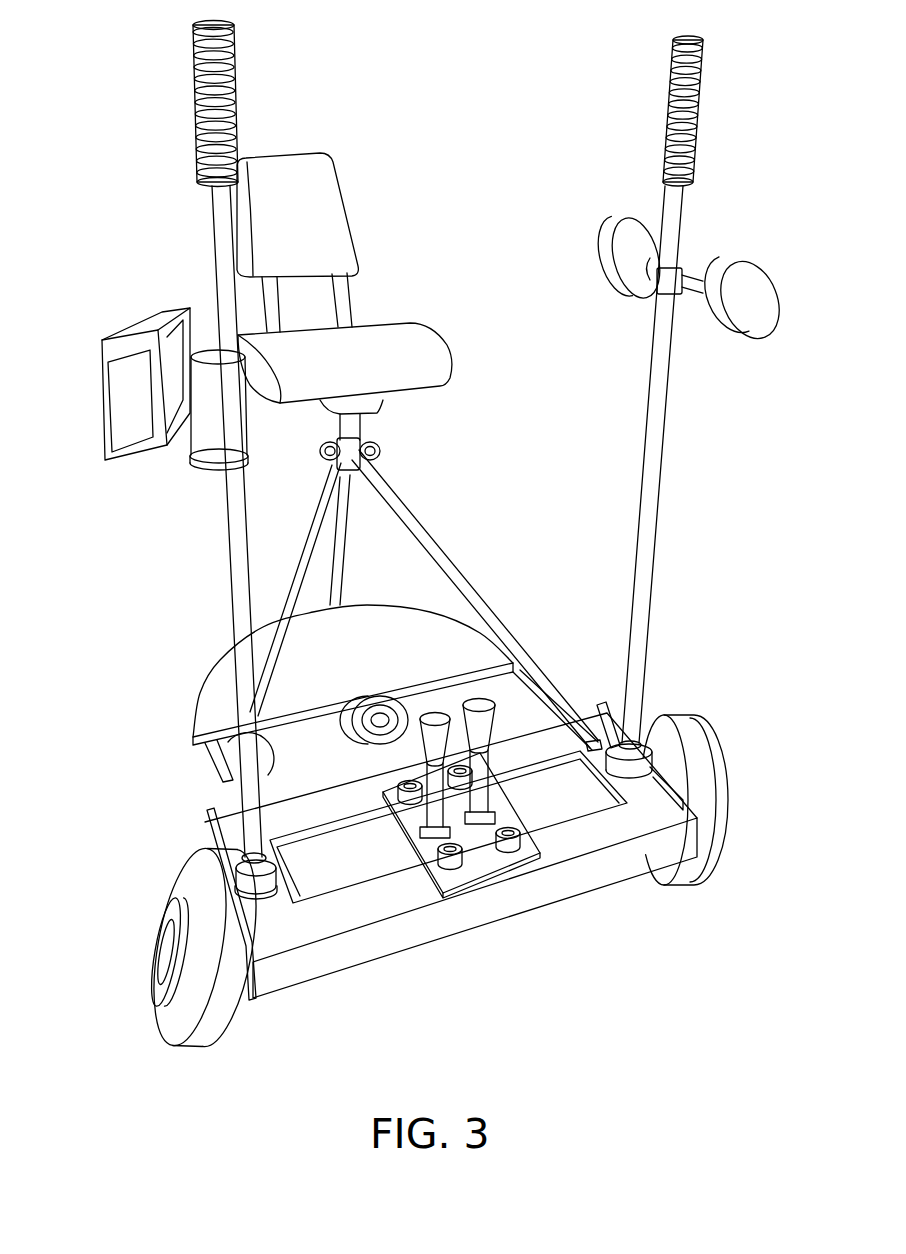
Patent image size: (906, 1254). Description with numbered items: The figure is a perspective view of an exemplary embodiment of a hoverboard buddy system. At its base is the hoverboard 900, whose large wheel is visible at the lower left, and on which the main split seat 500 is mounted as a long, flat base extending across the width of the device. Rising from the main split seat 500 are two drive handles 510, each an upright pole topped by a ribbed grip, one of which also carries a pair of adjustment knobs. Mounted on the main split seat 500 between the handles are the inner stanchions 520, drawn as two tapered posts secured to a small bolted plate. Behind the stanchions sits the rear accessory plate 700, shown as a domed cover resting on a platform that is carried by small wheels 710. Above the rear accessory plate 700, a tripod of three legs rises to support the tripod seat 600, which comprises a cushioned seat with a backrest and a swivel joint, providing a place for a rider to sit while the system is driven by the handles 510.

The main split seat 500 is at (668, 977).
The drive handles 510 is at (186, 101).
The inner stanchions 520 is at (467, 841).
The tripod seat 600 is at (400, 288).
The rear accessory plate 700 is at (403, 599).
The wheels 710 is at (318, 746).
The hoverboard 900 is at (147, 953).